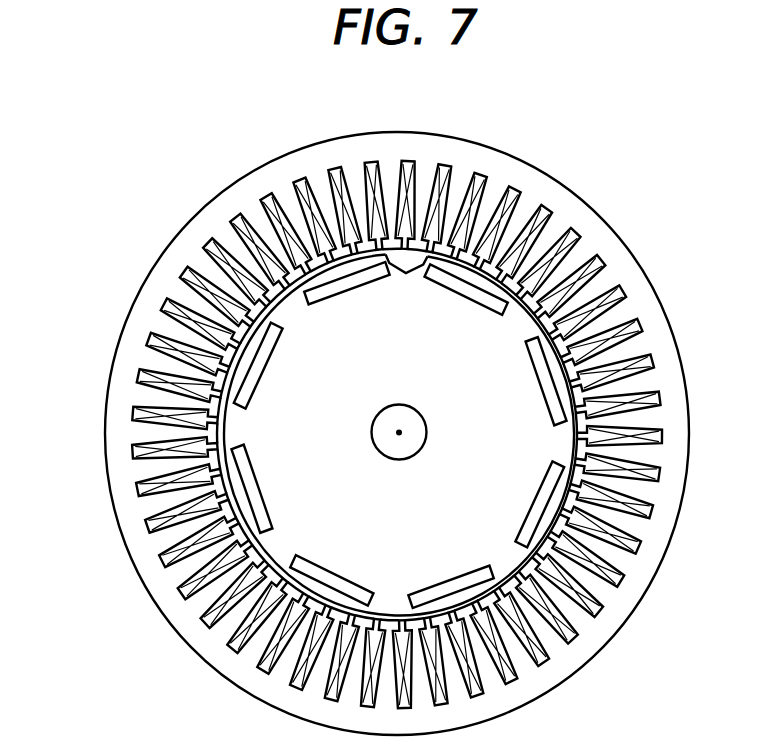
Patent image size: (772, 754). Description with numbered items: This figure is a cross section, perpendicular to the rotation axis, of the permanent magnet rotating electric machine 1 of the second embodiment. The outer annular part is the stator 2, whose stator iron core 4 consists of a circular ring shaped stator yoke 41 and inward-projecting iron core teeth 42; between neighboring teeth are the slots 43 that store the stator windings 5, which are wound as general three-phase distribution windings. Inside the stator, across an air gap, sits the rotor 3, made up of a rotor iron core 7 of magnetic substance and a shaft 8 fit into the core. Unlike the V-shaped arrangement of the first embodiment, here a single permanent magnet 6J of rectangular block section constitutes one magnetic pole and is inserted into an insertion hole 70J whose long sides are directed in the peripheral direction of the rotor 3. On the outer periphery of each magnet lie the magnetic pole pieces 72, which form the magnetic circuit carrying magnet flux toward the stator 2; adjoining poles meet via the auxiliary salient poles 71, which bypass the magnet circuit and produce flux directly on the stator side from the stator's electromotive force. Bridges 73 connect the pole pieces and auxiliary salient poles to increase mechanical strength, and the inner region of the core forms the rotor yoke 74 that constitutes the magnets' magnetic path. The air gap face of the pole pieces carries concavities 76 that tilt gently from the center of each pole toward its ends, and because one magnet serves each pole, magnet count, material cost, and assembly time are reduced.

The permanent magnet rotating electric machine 1 is at (742, 137).
The stator 2 is at (678, 321).
The rotor 3 is at (256, 430).
The stator iron core 4 is at (672, 457).
The stator windings 5 is at (642, 538).
The rotor iron core 7 is at (302, 535).
The shaft 8 is at (413, 407).
The stator yoke 41 is at (613, 247).
The iron core teeth 42 is at (487, 187).
The slots 43 is at (343, 185).
The auxiliary salient poles 71 is at (567, 432).
The magnetic pole pieces 72 is at (470, 273).
The bridges 73 is at (297, 293).
The rotor yoke 74 is at (455, 535).
The concavities 76 is at (406, 278).
The insertion hole 70J is at (255, 463).
The permanent magnet 6J is at (255, 502).